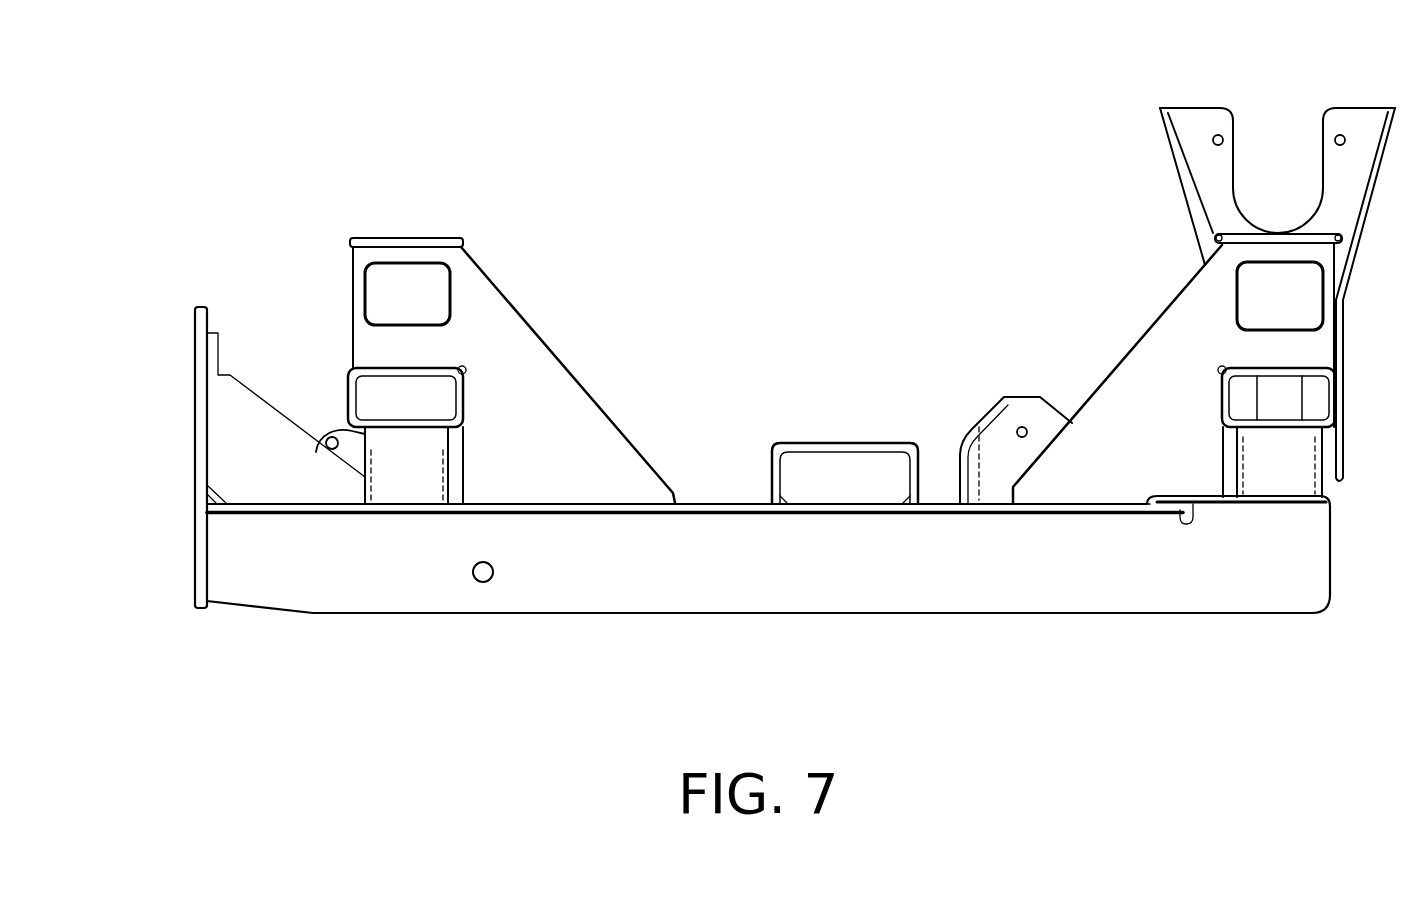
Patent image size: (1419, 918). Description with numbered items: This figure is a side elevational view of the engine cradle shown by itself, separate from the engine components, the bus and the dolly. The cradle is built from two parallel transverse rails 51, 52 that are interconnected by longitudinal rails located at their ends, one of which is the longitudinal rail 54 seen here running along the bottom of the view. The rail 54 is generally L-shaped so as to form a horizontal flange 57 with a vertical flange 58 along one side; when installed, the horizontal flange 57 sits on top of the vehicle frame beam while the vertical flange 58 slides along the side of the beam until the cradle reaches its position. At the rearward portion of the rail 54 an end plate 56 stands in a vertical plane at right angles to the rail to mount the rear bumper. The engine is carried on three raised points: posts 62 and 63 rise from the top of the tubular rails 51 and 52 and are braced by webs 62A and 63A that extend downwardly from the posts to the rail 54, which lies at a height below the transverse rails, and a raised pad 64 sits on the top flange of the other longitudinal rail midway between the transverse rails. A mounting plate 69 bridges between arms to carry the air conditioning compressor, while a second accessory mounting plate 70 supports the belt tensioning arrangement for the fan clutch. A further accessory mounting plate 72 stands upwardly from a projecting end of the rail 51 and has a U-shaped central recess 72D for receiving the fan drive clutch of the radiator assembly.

The rail 51 is at (1217, 398).
The rail 52 is at (393, 366).
The longitudinal rail 54 is at (580, 613).
The end plate 56 is at (188, 425).
The horizontal flange 57 is at (724, 500).
The vertical flange 58 is at (802, 588).
The post 62 is at (1177, 345).
The web 62A is at (1240, 230).
The post 63 is at (512, 328).
The web 63A is at (530, 352).
The raised pad 64 is at (843, 440).
The mounting plate 69 is at (333, 425).
The second accessory mounting plate 70 is at (1007, 396).
The accessory mounting plate 72 is at (1232, 274).
The U-shaped central recess 72D is at (1240, 137).